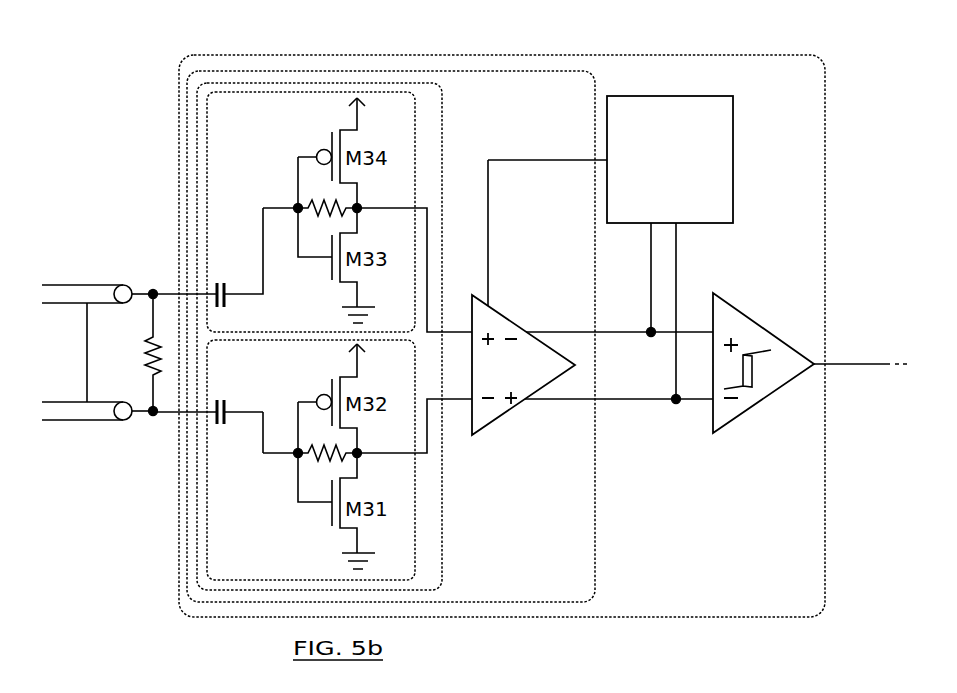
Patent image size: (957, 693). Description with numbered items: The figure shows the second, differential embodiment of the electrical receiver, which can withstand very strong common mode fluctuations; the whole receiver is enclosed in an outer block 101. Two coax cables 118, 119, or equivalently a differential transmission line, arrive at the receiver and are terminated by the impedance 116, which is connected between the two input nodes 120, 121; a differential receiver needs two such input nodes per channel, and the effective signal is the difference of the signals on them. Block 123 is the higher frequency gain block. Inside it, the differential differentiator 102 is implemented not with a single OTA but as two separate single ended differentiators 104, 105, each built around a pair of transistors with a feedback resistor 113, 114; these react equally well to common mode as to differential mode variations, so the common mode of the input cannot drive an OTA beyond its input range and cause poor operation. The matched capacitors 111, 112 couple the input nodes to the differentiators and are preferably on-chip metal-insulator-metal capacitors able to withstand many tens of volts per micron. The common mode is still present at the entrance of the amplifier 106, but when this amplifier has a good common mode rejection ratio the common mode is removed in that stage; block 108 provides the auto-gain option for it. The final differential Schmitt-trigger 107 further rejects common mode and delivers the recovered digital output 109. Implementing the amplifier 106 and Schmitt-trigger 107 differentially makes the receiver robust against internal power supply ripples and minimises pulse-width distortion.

The receiver circuit 101 is at (478, 55).
The differential differentiator 102 is at (441, 94).
The single ended differentiator 104 is at (207, 158).
The single ended differentiator 105 is at (207, 512).
The amplifier 106 is at (509, 316).
The differential Schmitt-trigger 107 is at (743, 313).
The auto-gain option 108 is at (625, 221).
The output 109 is at (843, 362).
The capacitor 111 is at (229, 297).
The capacitor 112 is at (227, 427).
The feedback resistor 113 is at (314, 202).
The feedback resistor 114 is at (323, 462).
The impedance 116 is at (147, 354).
The coax cable 118 is at (73, 284).
The coax cable 119 is at (105, 421).
The input node 120 is at (175, 293).
The input node 121 is at (167, 418).
The higher frequency gain block 123 is at (597, 527).